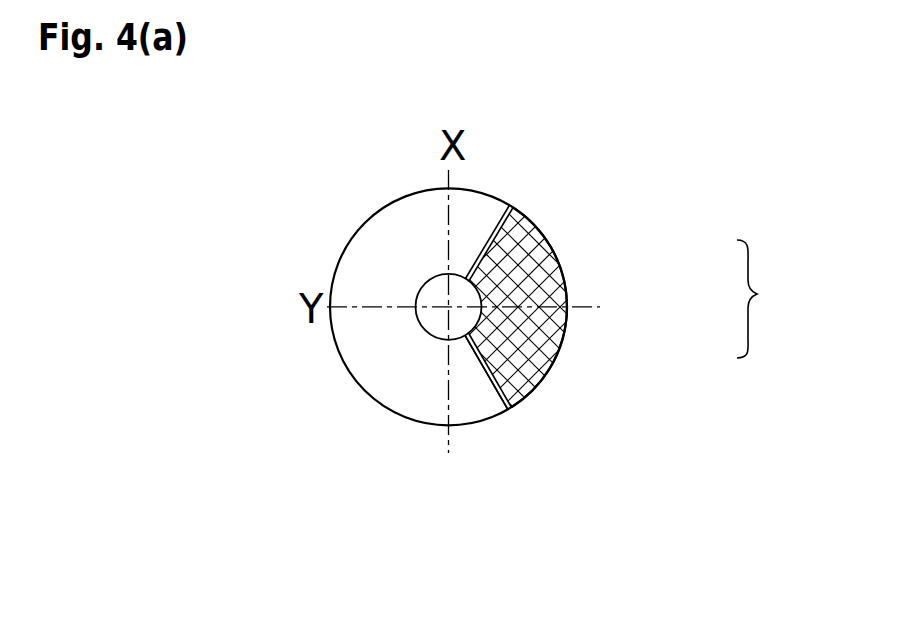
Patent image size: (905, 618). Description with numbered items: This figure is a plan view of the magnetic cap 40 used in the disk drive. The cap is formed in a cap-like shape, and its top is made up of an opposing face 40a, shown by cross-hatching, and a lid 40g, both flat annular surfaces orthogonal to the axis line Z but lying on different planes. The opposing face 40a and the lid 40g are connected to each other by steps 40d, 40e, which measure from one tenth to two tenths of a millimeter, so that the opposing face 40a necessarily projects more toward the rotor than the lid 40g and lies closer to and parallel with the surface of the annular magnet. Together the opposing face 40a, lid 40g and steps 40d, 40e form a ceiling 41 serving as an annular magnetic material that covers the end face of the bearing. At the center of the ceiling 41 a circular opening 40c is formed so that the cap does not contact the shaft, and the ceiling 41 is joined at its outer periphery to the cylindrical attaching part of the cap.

The magnetic cap 40 is at (339, 240).
The opposing face 40a is at (542, 282).
The circular opening 40c is at (443, 292).
The step 40d is at (486, 242).
The step 40e is at (484, 363).
The lid 40g is at (479, 400).
The ceiling 41 is at (782, 299).